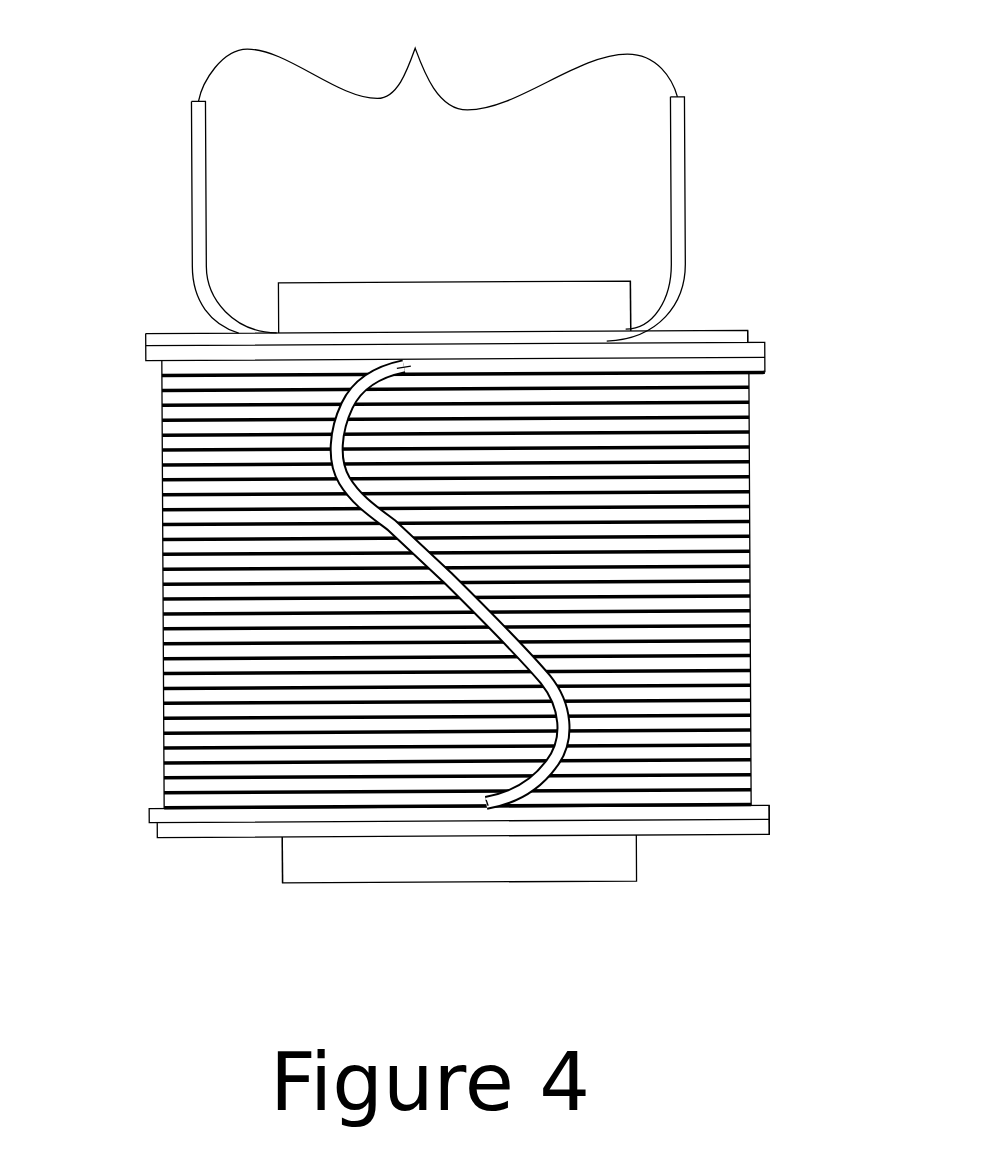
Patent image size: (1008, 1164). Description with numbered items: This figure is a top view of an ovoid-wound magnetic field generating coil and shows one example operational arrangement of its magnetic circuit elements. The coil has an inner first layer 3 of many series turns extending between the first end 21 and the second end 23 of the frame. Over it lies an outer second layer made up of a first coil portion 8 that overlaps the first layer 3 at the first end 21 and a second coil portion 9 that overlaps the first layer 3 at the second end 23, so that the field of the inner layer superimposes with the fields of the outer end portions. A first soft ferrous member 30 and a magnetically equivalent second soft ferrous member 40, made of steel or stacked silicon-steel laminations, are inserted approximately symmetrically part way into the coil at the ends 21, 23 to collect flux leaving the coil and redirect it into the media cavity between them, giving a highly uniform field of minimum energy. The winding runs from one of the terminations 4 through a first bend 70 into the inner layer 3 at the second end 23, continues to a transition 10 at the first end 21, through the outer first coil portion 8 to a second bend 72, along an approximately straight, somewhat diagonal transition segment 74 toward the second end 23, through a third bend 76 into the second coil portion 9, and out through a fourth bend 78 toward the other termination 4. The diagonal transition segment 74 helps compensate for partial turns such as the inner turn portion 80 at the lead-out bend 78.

The first layer 3 is at (158, 576).
The terminations 4 is at (438, 55).
The second coil portion 9 is at (146, 345).
The transition 10 is at (152, 831).
The second soft ferrous member 40 is at (448, 306).
The first soft ferrous member 30 is at (441, 858).
The first bend 70 is at (206, 297).
The fourth bend 78 is at (658, 310).
The transition segment 74 is at (453, 588).
The third bend 76 is at (356, 389).
The second bend 72 is at (552, 760).
The second end 23 is at (707, 314).
The first end 21 is at (237, 853).
The inner turn portion 80 is at (733, 333).
The first coil portion 8 is at (768, 815).